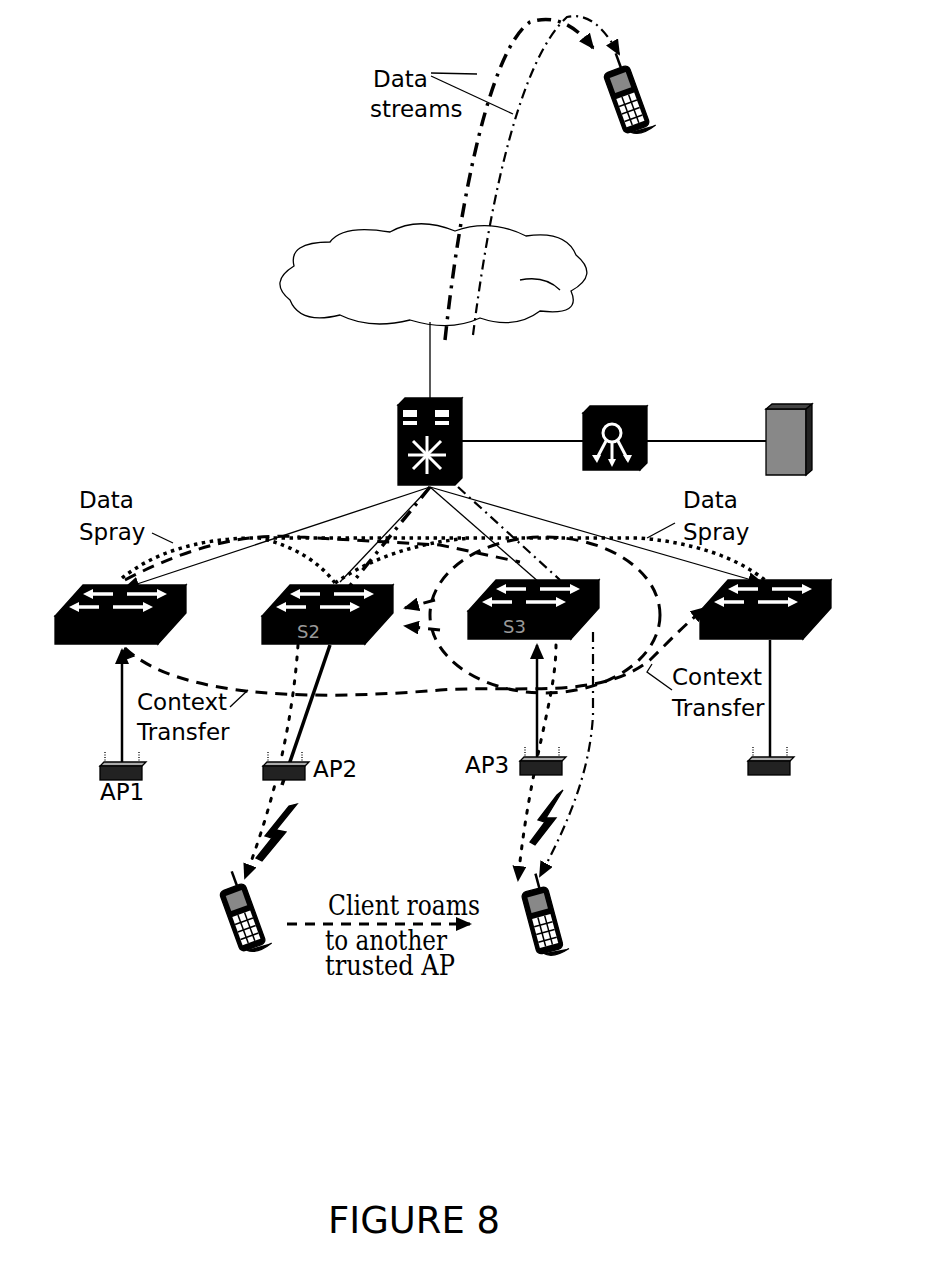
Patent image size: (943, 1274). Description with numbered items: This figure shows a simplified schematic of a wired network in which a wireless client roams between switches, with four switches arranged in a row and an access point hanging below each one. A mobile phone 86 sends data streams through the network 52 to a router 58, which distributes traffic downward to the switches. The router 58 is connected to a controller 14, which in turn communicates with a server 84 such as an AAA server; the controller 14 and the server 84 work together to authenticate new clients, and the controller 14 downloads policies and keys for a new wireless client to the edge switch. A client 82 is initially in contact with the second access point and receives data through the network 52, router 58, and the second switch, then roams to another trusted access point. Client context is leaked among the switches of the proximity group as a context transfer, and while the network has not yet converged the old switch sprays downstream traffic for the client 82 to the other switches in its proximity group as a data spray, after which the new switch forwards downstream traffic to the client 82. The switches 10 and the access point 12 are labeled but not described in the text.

The switch 10 is at (78, 598).
The access point 12 is at (792, 758).
The wireless controller 14 is at (640, 410).
The network 52 is at (347, 236).
The router 58 is at (398, 455).
The client 82 is at (216, 908).
The server 84 is at (795, 406).
The mobile phone 86 is at (642, 100).